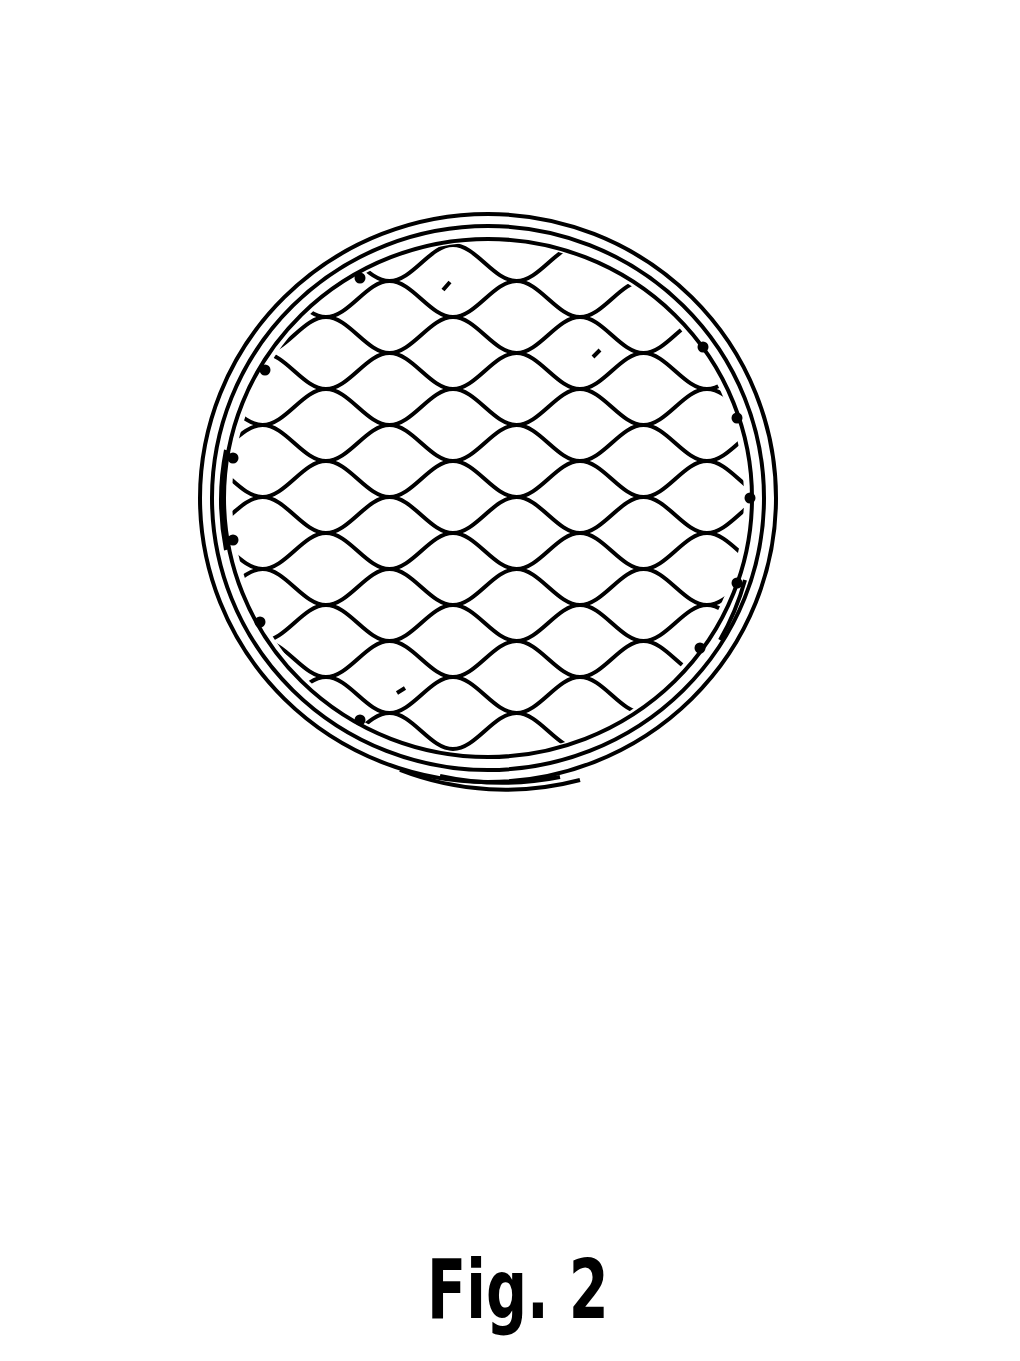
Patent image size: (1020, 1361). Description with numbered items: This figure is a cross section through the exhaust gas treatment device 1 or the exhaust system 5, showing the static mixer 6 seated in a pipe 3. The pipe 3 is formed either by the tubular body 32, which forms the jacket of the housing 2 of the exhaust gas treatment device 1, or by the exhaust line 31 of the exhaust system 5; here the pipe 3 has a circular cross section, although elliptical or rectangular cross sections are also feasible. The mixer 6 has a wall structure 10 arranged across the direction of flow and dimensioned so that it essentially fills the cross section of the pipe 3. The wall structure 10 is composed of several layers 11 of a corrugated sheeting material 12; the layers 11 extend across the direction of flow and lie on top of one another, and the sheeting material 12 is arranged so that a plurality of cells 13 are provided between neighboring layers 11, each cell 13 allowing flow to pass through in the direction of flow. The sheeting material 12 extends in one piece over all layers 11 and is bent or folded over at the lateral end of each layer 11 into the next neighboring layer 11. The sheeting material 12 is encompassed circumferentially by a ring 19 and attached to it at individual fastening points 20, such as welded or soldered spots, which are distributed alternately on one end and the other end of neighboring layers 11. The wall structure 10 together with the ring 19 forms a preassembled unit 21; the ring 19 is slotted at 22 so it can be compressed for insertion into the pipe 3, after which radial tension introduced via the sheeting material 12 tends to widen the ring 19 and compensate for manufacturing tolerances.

The exhaust gas treatment device 1 is at (441, 178).
The housing 2 is at (557, 473).
The exhaust system 5 is at (722, 300).
The pipe 3 is at (574, 776).
The static mixer 6 is at (740, 612).
The wall structure 10 is at (483, 705).
The layers 11 is at (245, 425).
The corrugated sheeting material 12 is at (340, 672).
The cells 13 is at (340, 300).
The ring 19 is at (227, 505).
The fastening points 20 is at (737, 418).
The unit 21 is at (498, 787).
The slot 22 is at (597, 257).
The exhaust line 31 is at (488, 409).
The tubular body 32 is at (515, 220).